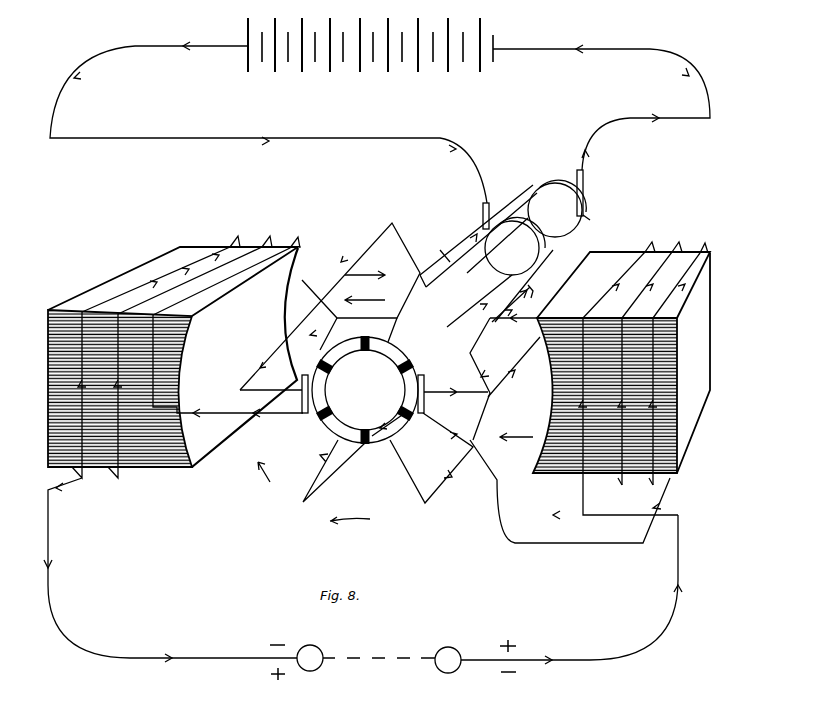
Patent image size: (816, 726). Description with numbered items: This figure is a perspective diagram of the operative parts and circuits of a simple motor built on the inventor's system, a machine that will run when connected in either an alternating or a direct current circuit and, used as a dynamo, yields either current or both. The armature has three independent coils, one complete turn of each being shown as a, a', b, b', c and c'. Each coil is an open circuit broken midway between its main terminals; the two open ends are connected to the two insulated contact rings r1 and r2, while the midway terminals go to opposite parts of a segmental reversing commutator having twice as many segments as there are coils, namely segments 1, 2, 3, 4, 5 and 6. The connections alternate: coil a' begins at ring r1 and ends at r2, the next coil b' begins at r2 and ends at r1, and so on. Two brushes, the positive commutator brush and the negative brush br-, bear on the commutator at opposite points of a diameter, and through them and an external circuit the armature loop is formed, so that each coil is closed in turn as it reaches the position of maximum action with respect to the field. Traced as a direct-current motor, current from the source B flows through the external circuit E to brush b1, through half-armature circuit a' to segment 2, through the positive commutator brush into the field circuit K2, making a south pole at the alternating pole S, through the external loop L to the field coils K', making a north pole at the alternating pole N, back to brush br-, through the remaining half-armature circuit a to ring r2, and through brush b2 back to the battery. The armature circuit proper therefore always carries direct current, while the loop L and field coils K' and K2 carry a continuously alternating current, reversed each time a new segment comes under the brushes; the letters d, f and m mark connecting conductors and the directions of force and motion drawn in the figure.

The source of direct current B is at (365, 45).
The external circuit E is at (380, 122).
The south pole of field S is at (247, 336).
The north pole of field N is at (608, 296).
The field-circuit K2 is at (173, 404).
The field-coils K' is at (589, 385).
The external loop L is at (365, 597).
The segment of reversing-commutator 1 is at (409, 390).
The segment of reversing-commutator 2 is at (321, 390).
The segment of reversing-commutator 3 is at (388, 426).
The segment of reversing-commutator 4 is at (342, 353).
The segment of reversing-commutator 5 is at (342, 426).
The segment of reversing-commutator 6 is at (388, 353).
The brush br- is at (453, 397).
The armature-coil c is at (334, 471).
The armature-coil b is at (431, 458).
The half-armature circuit a' is at (408, 298).
The armature-coil b' is at (428, 234).
The armature-coil c' is at (470, 278).
The insulated contact-ring r1 is at (515, 246).
The insulated contact-ring r2 is at (557, 208).
The brush b1 is at (472, 216).
The brush b2 is at (590, 195).
The half-armature circuit a is at (496, 370).
The connecting conductor d is at (524, 306).
The direction of force f is at (439, 360).
The direction of motion m is at (321, 390).